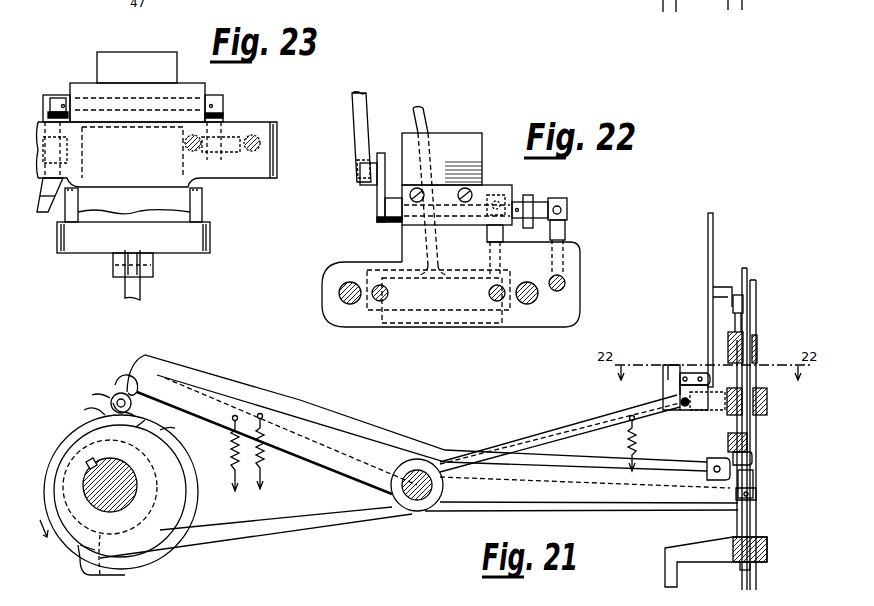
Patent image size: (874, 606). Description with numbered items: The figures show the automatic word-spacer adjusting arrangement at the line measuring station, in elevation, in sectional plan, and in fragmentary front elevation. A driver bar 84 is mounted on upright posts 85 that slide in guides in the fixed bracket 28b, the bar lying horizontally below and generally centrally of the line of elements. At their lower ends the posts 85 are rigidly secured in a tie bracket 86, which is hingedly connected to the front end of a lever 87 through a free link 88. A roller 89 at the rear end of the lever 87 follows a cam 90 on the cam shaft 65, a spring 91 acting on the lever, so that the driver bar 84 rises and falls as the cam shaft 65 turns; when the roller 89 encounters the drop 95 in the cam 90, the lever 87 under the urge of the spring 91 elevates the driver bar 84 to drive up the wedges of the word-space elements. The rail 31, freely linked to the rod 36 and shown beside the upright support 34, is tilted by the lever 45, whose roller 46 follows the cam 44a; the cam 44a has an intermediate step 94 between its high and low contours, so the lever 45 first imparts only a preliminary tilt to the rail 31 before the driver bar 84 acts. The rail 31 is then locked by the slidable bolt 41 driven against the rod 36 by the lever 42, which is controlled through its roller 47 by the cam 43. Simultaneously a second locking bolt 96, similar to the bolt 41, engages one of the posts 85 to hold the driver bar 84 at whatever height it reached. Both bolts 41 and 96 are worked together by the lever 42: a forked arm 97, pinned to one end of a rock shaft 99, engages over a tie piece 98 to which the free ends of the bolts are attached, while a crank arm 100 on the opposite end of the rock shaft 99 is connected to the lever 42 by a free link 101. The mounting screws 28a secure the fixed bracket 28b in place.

In FIG. 22, the mounting screw 28a is at (531, 329).
In FIG. 23, the fixed bracket 28b is at (236, 166).
In FIG. 22, the fixed bracket 28b is at (556, 314).
In FIG. 21, the fixed bracket 28b is at (758, 506).
In FIG. 21, the rail 31 is at (736, 293).
In FIG. 21, the upright support 34 is at (715, 290).
In FIG. 22, the rod 36 is at (564, 283).
In FIG. 21, the rod 36 is at (732, 332).
In FIG. 22, the slidable bolt 41 is at (566, 229).
In FIG. 23, the lever 42 is at (46, 208).
In FIG. 22, the lever 42 is at (353, 132).
In FIG. 21, the lever 42 is at (215, 522).
In FIG. 21, the cam 43 is at (148, 463).
In FIG. 21, the cam 44a is at (175, 422).
In FIG. 21, the lever 45 is at (224, 382).
In FIG. 21, the roller 46 is at (116, 380).
In FIG. 21, the roller 47 is at (100, 574).
In FIG. 21, the cam shaft 65 is at (138, 487).
In FIG. 21, the driver bar 84 is at (748, 272).
In FIG. 23, the upright posts 85 is at (203, 214).
In FIG. 22, the upright posts 85 is at (385, 300).
In FIG. 21, the upright posts 85 is at (756, 303).
In FIG. 23, the tie bracket 86 is at (168, 248).
In FIG. 22, the tie bracket 86 is at (375, 269).
In FIG. 21, the tie bracket 86 is at (758, 460).
In FIG. 22, the lever 87 is at (414, 120).
In FIG. 21, the lever 87 is at (340, 436).
In FIG. 23, the free link 88 is at (141, 291).
In FIG. 22, the free link 88 is at (436, 312).
In FIG. 21, the free link 88 is at (758, 478).
In FIG. 21, the roller 89 is at (111, 400).
In FIG. 21, the cam 90 is at (178, 498).
In FIG. 21, the spring 91 is at (232, 441).
In FIG. 21, the intermediate step 94 is at (92, 395).
In FIG. 21, the drop 95 is at (95, 413).
In FIG. 22, the locking bolt 96 is at (487, 231).
In FIG. 21, the locking bolt 96 is at (720, 410).
In FIG. 23, the forked arm 97 is at (222, 118).
In FIG. 22, the forked arm 97 is at (528, 195).
In FIG. 21, the forked arm 97 is at (686, 406).
In FIG. 23, the tie piece 98 is at (240, 136).
In FIG. 22, the tie piece 98 is at (555, 200).
In FIG. 23, the rock shaft 99 is at (183, 95).
In FIG. 22, the rock shaft 99 is at (484, 195).
In FIG. 21, the rock shaft 99 is at (697, 373).
In FIG. 23, the crank arm 100 is at (62, 99).
In FIG. 22, the crank arm 100 is at (377, 192).
In FIG. 23, the free link 101 is at (47, 95).
In FIG. 21, the free link 101 is at (656, 387).